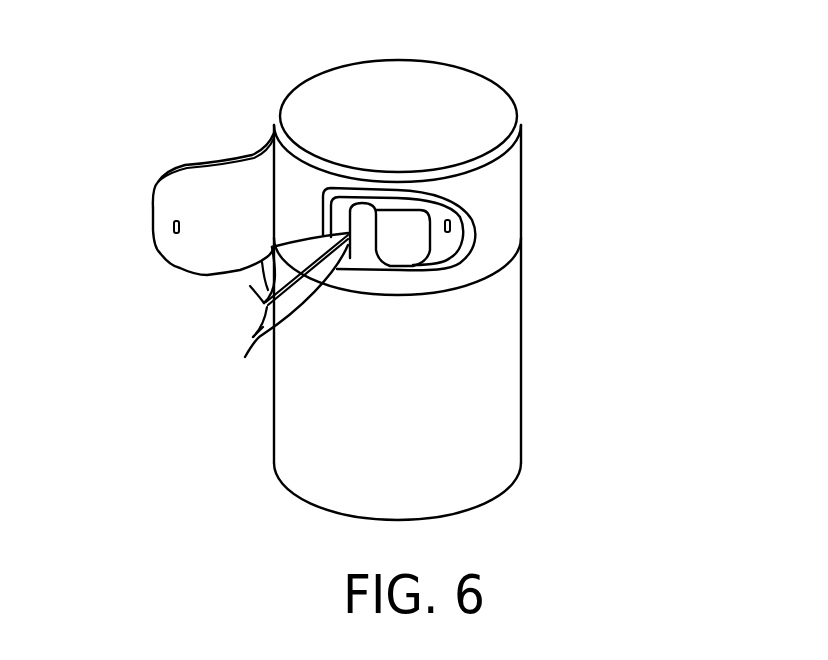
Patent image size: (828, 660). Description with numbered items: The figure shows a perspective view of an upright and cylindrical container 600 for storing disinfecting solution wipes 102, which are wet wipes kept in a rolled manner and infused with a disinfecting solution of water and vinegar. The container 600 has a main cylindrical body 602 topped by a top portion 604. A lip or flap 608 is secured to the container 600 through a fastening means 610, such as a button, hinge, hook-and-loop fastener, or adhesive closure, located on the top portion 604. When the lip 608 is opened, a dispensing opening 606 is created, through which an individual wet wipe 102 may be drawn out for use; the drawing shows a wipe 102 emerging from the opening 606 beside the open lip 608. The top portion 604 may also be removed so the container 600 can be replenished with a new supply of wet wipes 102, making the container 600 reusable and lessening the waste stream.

The upright and cylindrical container 600 is at (240, 86).
The cylindrical housing body 602 is at (492, 310).
The top portion 604 is at (492, 168).
The dispensing opening 606 is at (410, 243).
The lip/flap 608 is at (197, 250).
The fastening means 610 is at (452, 225).
The disinfecting solution wipes 102 is at (262, 330).